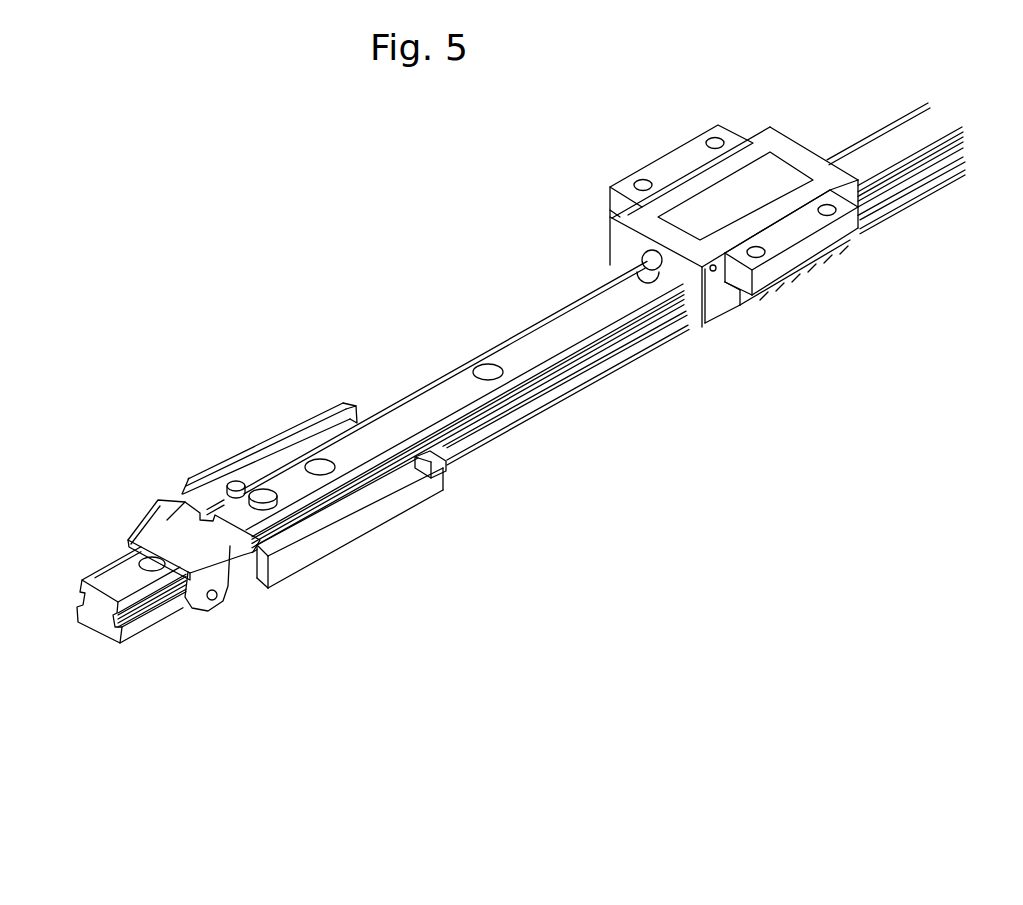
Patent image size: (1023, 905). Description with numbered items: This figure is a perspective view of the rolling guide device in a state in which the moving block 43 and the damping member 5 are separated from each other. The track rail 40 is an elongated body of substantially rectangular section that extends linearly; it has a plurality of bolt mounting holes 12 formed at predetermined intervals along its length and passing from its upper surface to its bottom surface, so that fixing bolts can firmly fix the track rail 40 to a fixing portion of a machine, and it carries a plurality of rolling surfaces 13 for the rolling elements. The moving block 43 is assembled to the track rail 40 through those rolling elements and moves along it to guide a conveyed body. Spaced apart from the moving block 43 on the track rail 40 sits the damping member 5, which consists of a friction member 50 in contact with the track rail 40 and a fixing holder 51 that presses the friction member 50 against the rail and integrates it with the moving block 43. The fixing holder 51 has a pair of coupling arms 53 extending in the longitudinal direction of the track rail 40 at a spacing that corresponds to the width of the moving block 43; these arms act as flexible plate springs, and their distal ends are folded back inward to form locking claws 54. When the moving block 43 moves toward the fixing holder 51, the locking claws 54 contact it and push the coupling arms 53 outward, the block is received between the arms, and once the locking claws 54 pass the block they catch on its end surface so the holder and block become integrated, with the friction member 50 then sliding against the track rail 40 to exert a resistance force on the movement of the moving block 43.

The damping member 5 is at (141, 504).
The bolt mounting holes 12 is at (487, 368).
The rolling surfaces 13 is at (591, 325).
The track rail 40 is at (564, 392).
The moving block 43 is at (673, 156).
The friction member 50 is at (232, 506).
The fixing holder 51 is at (286, 588).
The coupling arms 53 is at (307, 428).
The locking claws 54 is at (428, 448).